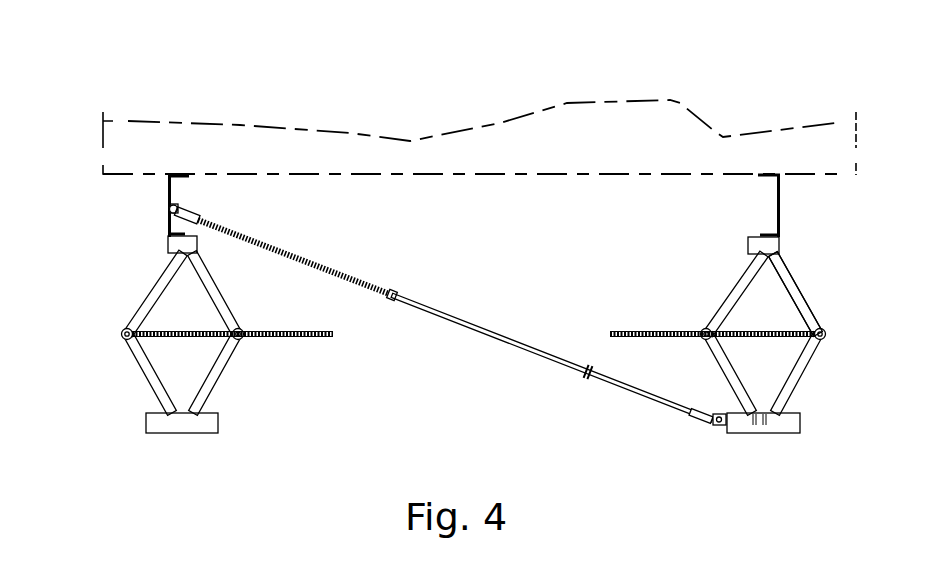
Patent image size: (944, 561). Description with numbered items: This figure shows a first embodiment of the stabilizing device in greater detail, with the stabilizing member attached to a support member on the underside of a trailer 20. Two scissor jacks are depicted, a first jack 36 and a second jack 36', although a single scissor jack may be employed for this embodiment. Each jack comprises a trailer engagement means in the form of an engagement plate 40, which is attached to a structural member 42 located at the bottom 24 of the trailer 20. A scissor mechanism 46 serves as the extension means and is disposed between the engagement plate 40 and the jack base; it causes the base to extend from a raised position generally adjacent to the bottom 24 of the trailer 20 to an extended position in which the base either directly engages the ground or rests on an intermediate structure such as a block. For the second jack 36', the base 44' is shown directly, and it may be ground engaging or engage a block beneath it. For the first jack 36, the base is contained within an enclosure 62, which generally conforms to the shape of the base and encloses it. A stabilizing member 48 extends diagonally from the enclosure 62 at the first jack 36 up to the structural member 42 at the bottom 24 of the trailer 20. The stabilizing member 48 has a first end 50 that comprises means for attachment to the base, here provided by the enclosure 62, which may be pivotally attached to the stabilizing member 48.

The trailer 20 is at (505, 90).
The bottom of the trailer 24 is at (523, 174).
The first jack 36 is at (755, 333).
The second jack 36' is at (174, 295).
The engagement plate 40 is at (780, 246).
The structural member 42 is at (779, 206).
The base 44' is at (222, 419).
The scissor mechanism 46 is at (818, 312).
The stabilizing member 48 is at (447, 345).
The first end 50 is at (712, 423).
The enclosure 62 is at (800, 430).